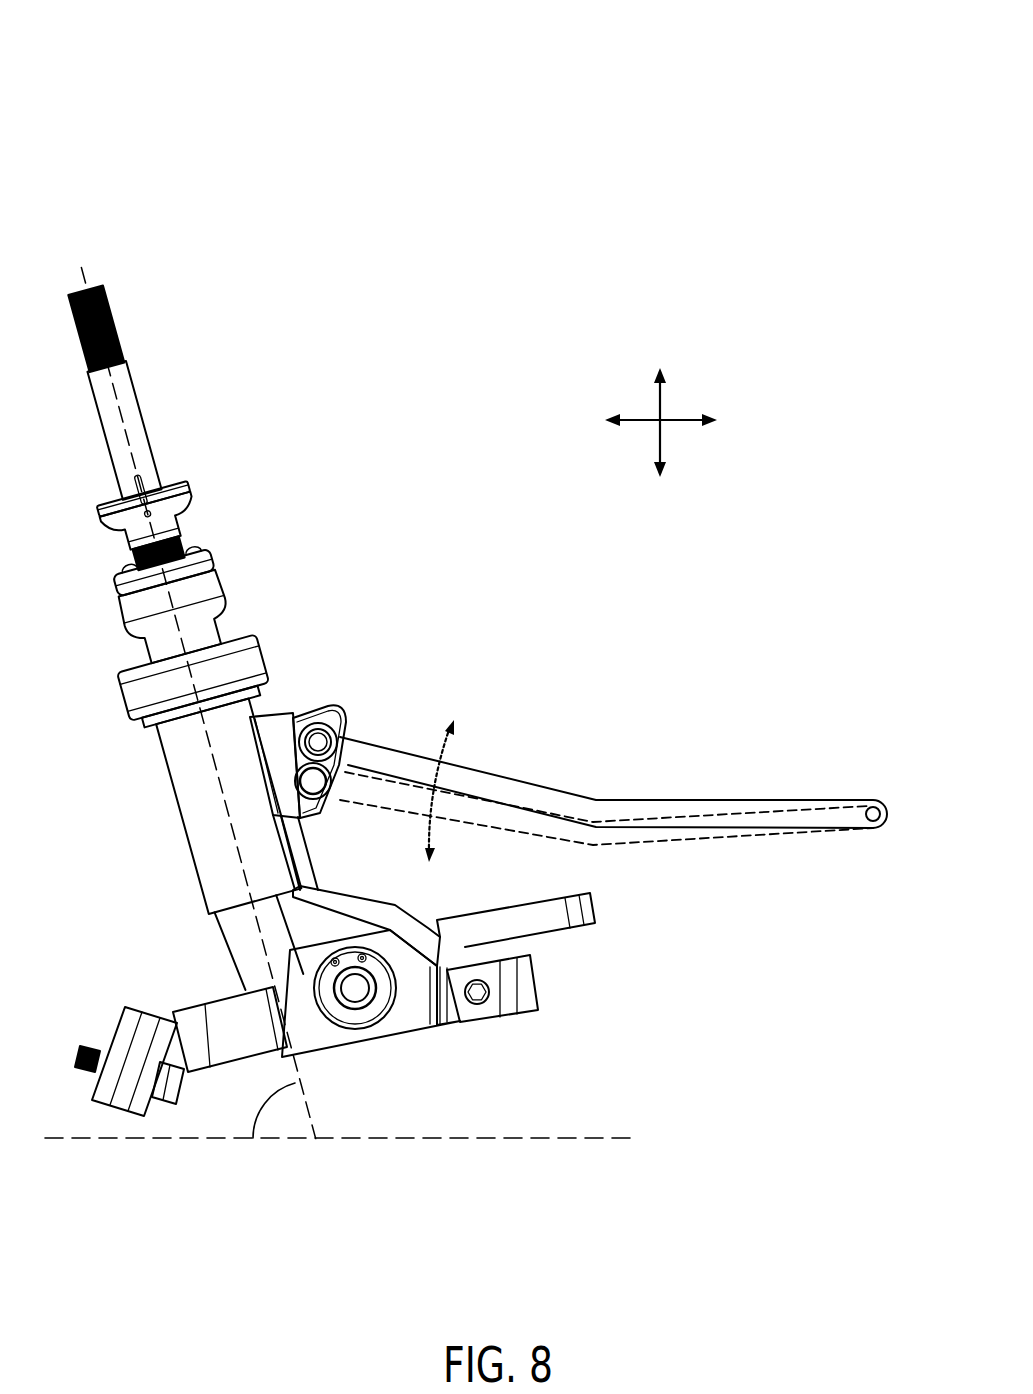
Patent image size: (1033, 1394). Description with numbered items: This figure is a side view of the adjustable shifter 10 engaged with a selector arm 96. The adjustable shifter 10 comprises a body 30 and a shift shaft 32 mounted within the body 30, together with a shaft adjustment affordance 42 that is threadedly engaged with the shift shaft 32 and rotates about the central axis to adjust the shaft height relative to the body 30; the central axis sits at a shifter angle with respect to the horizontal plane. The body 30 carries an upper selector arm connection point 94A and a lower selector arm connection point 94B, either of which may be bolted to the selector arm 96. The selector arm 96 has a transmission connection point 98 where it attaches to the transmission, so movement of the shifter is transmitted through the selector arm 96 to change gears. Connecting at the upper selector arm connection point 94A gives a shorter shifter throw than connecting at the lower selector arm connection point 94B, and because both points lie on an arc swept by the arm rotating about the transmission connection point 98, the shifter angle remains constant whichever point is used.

The adjustable shifter 10 is at (805, 52).
The body 30 is at (150, 811).
The shift shaft 32 is at (97, 450).
The shaft adjustment affordance 42 is at (113, 693).
The upper selector arm connection point 94A is at (318, 722).
The lower selector arm connection point 94B is at (318, 812).
The selector arm 96 is at (550, 788).
The transmission connection point 98 is at (875, 805).